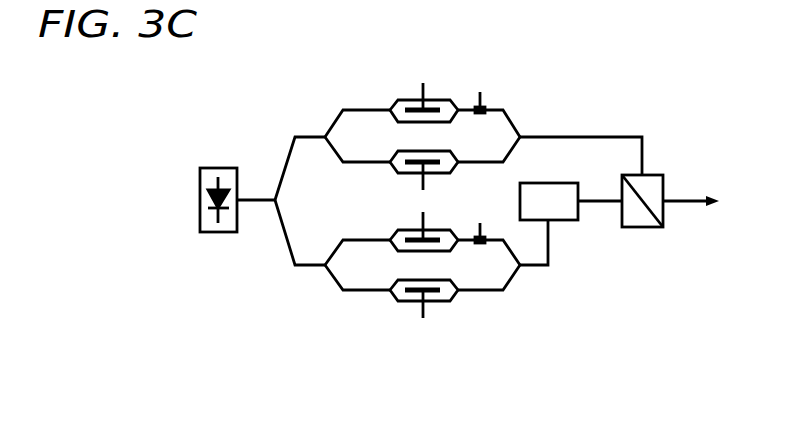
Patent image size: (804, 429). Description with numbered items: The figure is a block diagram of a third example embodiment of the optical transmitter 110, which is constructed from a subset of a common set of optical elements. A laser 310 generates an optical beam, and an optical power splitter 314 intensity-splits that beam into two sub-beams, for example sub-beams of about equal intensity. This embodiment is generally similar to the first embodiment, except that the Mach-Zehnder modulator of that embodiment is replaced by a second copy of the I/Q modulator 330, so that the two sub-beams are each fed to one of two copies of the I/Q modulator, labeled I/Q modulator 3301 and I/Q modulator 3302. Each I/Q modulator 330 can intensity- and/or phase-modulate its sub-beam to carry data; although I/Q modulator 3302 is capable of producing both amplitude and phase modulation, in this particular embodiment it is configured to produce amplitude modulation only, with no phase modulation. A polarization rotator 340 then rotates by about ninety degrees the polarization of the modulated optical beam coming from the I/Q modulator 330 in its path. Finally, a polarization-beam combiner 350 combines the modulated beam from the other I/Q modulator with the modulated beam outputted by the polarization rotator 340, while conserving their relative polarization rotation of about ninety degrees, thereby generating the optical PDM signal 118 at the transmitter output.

The optical transmitter 110 is at (132, 73).
The laser 310 is at (200, 197).
The optical power splitter 314 is at (271, 187).
The I/Q modulator 330 is at (467, 196).
The first I/Q modulator 3301 is at (375, 310).
The second I/Q modulator 3302 is at (378, 94).
The polarization rotator 340 is at (548, 183).
The polarization-beam combiner 350 is at (656, 178).
The optical PDM signal 118 is at (686, 207).